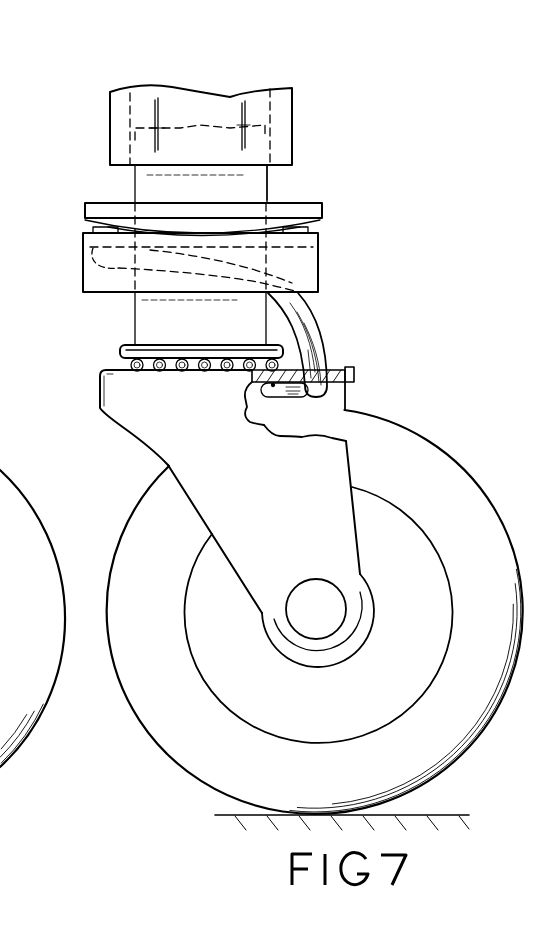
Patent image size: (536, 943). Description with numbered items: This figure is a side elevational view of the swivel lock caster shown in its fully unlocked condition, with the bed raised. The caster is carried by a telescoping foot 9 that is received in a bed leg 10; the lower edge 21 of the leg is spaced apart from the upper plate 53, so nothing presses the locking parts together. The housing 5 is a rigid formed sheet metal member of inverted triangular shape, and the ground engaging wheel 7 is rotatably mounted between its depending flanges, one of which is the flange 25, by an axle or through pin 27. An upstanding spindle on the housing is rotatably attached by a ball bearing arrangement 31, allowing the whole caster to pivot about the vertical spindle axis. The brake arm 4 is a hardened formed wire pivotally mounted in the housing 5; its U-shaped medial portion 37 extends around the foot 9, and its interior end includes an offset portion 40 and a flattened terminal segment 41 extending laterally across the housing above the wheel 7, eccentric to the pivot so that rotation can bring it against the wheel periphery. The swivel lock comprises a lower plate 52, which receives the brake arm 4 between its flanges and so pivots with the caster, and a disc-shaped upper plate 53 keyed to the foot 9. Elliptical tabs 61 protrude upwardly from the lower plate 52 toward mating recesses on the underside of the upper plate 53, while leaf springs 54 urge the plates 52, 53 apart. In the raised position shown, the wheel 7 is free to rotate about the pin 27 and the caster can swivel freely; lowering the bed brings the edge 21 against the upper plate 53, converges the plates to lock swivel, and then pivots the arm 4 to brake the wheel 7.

The bed leg 10 is at (280, 100).
The telescoping foot 9 is at (147, 188).
The lower edge of leg 21 is at (278, 167).
The upper plate 53 is at (297, 202).
The leaf spring 54 is at (313, 223).
The tabs 61 is at (90, 228).
The lower plate 52 is at (310, 272).
The medial portion of brake arm 37 is at (110, 272).
The brake arm 4 is at (317, 329).
The ball bearing arrangement 31 is at (170, 372).
The housing 5 is at (127, 403).
The depending flange 25 is at (338, 553).
The flattened terminal segment 41 is at (276, 399).
The offset portion 40 is at (305, 400).
The axle 27 is at (328, 620).
The caster wheel 7 is at (446, 487).